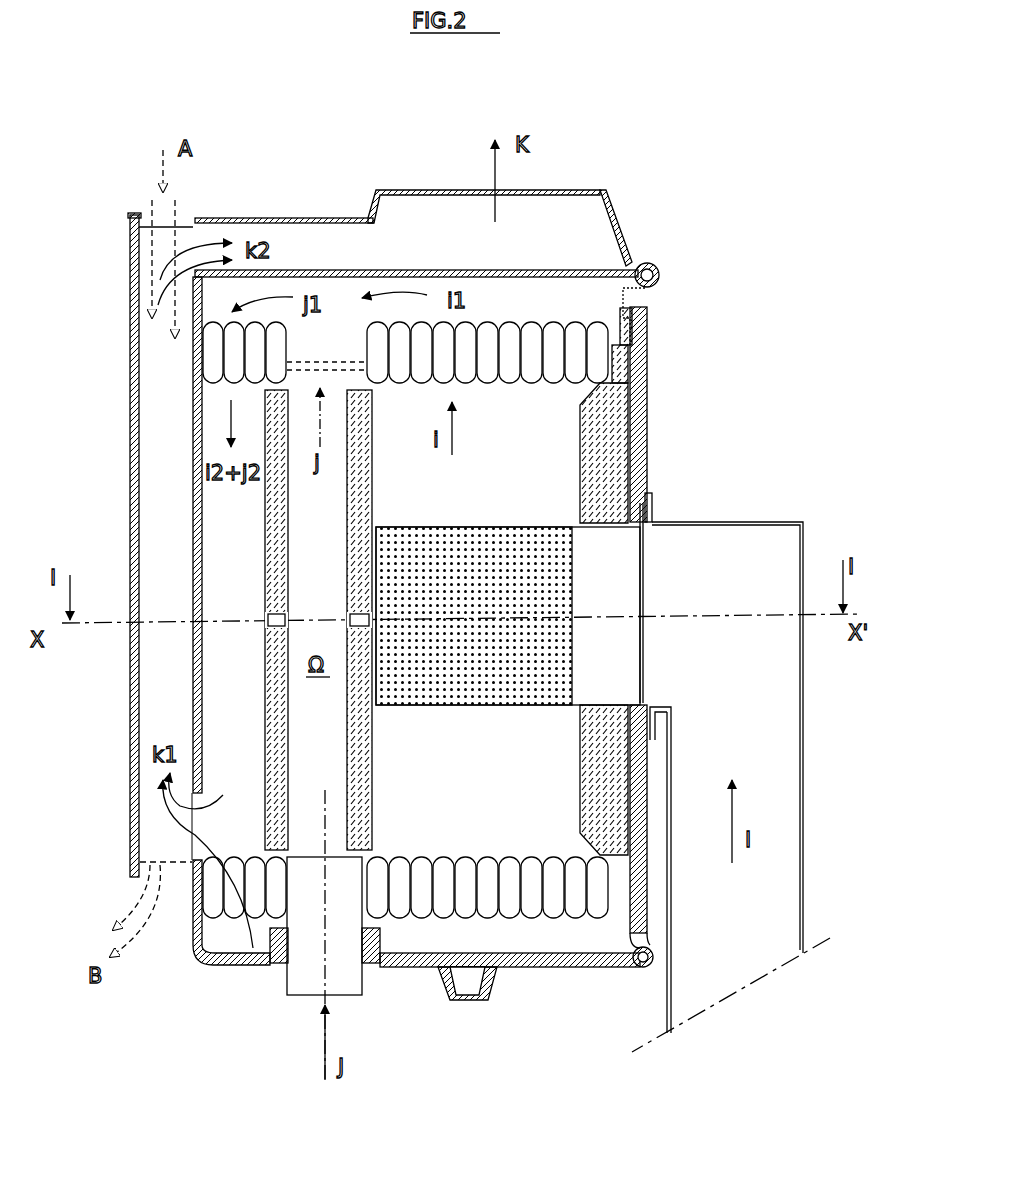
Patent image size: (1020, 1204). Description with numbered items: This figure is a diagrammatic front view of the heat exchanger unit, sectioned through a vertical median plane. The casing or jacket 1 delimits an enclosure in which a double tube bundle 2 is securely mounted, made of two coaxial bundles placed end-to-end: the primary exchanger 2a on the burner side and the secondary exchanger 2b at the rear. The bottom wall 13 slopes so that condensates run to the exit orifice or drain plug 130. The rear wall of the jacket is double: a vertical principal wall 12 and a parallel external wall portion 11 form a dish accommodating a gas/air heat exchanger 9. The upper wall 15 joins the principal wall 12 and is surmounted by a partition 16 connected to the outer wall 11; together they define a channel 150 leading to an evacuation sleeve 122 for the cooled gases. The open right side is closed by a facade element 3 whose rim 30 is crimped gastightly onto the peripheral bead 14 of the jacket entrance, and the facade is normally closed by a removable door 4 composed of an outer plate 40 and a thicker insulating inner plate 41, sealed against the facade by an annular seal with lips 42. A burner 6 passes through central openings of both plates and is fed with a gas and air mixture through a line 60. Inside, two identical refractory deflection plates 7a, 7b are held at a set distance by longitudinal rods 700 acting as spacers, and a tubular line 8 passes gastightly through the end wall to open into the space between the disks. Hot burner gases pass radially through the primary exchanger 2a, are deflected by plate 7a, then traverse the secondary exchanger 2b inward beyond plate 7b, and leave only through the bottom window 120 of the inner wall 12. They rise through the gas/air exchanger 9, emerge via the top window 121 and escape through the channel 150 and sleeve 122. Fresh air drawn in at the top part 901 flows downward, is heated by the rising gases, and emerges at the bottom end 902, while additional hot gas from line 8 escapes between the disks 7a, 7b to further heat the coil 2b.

The casing 1 is at (213, 967).
The double tube bundle 2 is at (499, 845).
The primary exchanger tube bundle 2a is at (505, 400).
The secondary exchanger tube bundle 2b is at (282, 342).
The facade element 3 is at (641, 292).
The removable door 4 is at (652, 619).
The burner 6 is at (512, 535).
The deflection plate 7a is at (368, 488).
The deflection plate 7b is at (268, 572).
The line 8 is at (288, 983).
The gas/air heat exchanger 9 is at (157, 490).
The external wall portion 11 is at (127, 545).
The principal wall 12 is at (193, 428).
The bottom wall 13 is at (590, 968).
The peripheral bead 14 is at (645, 975).
The upper wall 15 is at (440, 272).
The partition 16 is at (310, 218).
The rim 30 is at (652, 263).
The outer plate 40 is at (647, 420).
The inner plate 41 is at (610, 460).
The annular seal with lips 42 is at (650, 330).
The line 60 is at (805, 545).
The bottom window 120 is at (178, 840).
The top window 121 is at (157, 313).
The evacuation sleeve 122 is at (607, 215).
The exit orifice 130 is at (488, 998).
The channel 150 is at (342, 264).
The longitudinal rods 700 is at (340, 367).
The top part 901 is at (160, 232).
The bottom end 902 is at (145, 885).